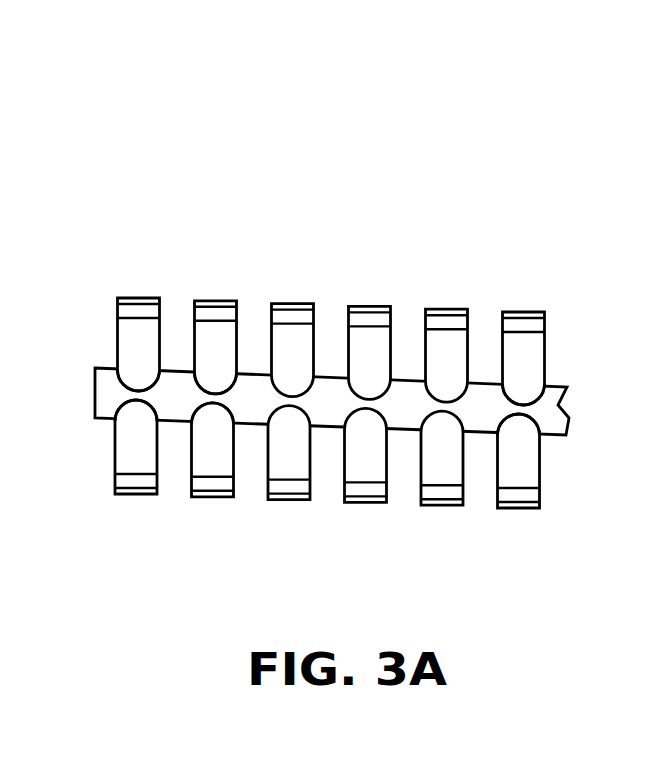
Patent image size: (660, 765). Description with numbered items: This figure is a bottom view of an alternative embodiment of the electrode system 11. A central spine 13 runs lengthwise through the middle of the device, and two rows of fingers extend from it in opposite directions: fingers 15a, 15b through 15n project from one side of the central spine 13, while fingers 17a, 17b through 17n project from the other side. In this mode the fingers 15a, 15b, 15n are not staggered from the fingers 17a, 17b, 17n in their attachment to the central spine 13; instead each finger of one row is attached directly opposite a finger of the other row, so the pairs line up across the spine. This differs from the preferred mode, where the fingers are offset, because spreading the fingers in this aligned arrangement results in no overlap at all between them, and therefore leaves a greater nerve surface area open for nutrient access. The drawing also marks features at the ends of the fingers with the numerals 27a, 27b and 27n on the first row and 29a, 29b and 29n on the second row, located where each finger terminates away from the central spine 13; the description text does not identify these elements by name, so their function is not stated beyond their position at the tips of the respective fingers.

The electrode system 11 is at (523, 138).
The central spine 13 is at (108, 393).
The finger 15a is at (140, 298).
The finger 15b is at (214, 300).
The finger 15n is at (528, 311).
The finger 17a is at (132, 494).
The finger 17b is at (208, 497).
The finger 17n is at (517, 508).
The closed rounded end of tube 15a 27a is at (135, 380).
The closed rounded end of tube 15b 27b is at (215, 387).
The closed rounded end of tube 15n 27n is at (520, 395).
The closed rounded end of tube 17a 29a is at (135, 408).
The closed rounded end of tube 17b 29b is at (212, 412).
The closed rounded end of tube 17n 29n is at (518, 423).